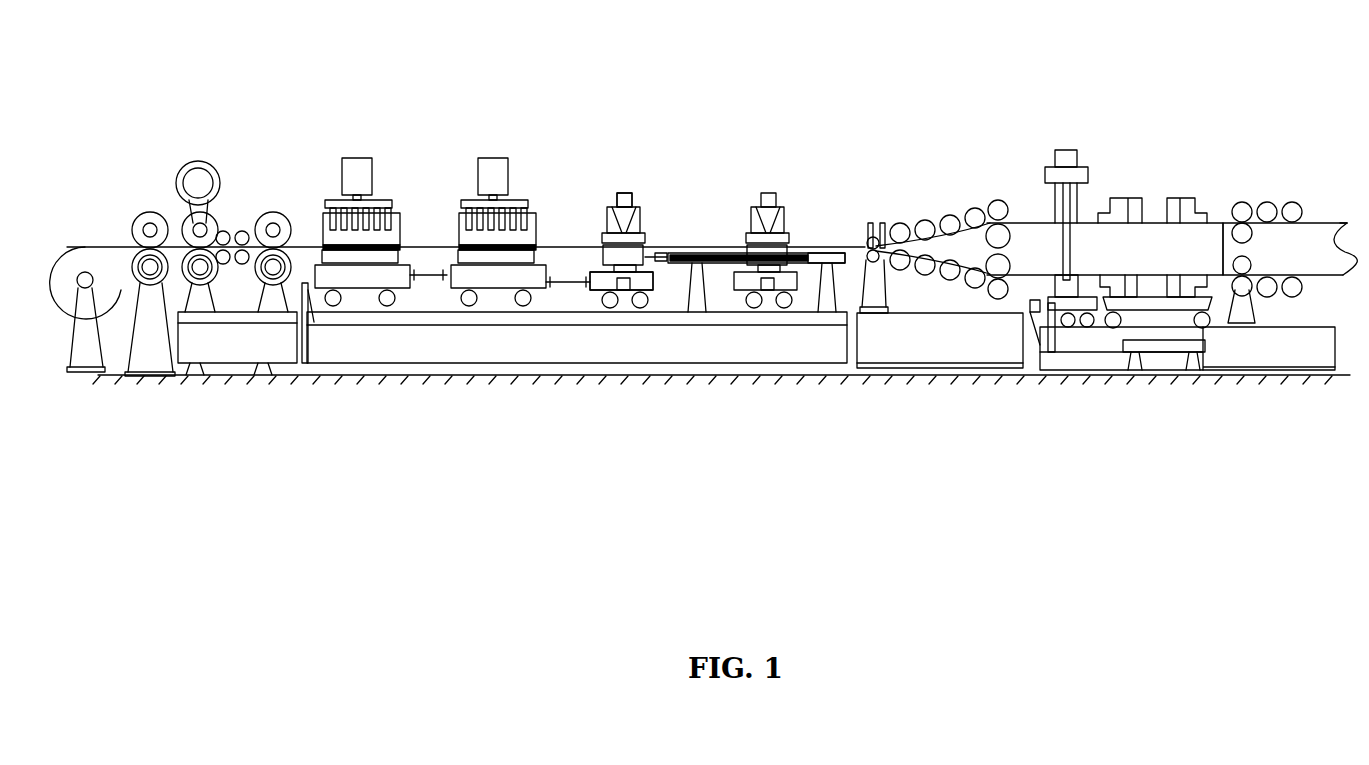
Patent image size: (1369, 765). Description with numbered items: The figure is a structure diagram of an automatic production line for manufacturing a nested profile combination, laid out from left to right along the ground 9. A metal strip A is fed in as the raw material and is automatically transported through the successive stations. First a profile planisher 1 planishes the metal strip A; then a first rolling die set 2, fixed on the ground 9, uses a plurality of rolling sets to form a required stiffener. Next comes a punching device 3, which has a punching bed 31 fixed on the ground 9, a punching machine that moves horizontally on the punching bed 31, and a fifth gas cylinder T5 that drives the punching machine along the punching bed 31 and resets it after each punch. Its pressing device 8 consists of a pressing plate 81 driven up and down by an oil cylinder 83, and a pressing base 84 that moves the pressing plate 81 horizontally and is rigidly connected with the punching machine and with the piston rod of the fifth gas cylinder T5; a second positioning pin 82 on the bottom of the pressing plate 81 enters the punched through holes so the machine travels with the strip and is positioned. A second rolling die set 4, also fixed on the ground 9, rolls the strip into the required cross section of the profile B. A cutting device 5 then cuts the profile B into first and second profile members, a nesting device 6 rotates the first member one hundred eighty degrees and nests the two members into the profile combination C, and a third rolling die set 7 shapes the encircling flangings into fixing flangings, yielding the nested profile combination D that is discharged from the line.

The metal strip A is at (64, 247).
The profile planisher 1 is at (147, 195).
The first rolling die set 2 is at (241, 197).
The punching device 3 is at (419, 185).
The punching bed 31 is at (350, 345).
The pressing device 8 is at (711, 268).
The pressing plate 81 is at (606, 209).
The second positioning pin 82 is at (634, 208).
The oil cylinder 83 is at (620, 208).
The pressing base 84 is at (598, 290).
The fifth gas cylinder T5 is at (818, 250).
The second rolling die set 4 is at (933, 200).
The profile B is at (1028, 222).
The cutting device 5 is at (1067, 148).
The nesting device 6 is at (1173, 192).
The profile combination C is at (1215, 222).
The third rolling die set 7 is at (1272, 190).
The nested profile combination D is at (1318, 222).
The ground 9 is at (660, 384).